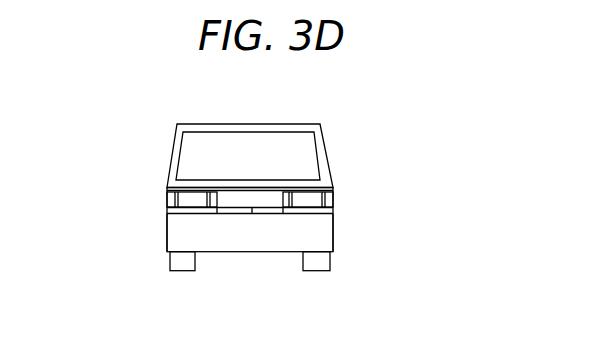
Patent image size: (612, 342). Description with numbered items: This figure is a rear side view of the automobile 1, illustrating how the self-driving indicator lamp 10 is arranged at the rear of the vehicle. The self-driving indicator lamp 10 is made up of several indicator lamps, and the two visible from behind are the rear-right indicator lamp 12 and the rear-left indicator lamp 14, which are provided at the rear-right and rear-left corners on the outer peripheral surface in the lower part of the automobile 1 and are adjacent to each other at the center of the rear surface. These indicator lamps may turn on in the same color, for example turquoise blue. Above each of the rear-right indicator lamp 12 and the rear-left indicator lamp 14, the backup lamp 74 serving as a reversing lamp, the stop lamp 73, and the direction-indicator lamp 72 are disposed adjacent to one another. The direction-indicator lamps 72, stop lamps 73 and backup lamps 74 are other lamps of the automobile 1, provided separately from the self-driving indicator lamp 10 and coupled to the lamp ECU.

The automobile 1 is at (379, 143).
The self-driving indicator lamp 10 is at (250, 229).
The rear-right indicator lamp 12 is at (333, 211).
The rear-left indicator lamp 14 is at (166, 214).
The direction-indicator lamp 72 is at (167, 196).
The stop lamp 73 is at (200, 197).
The backup lamp 74 is at (207, 208).